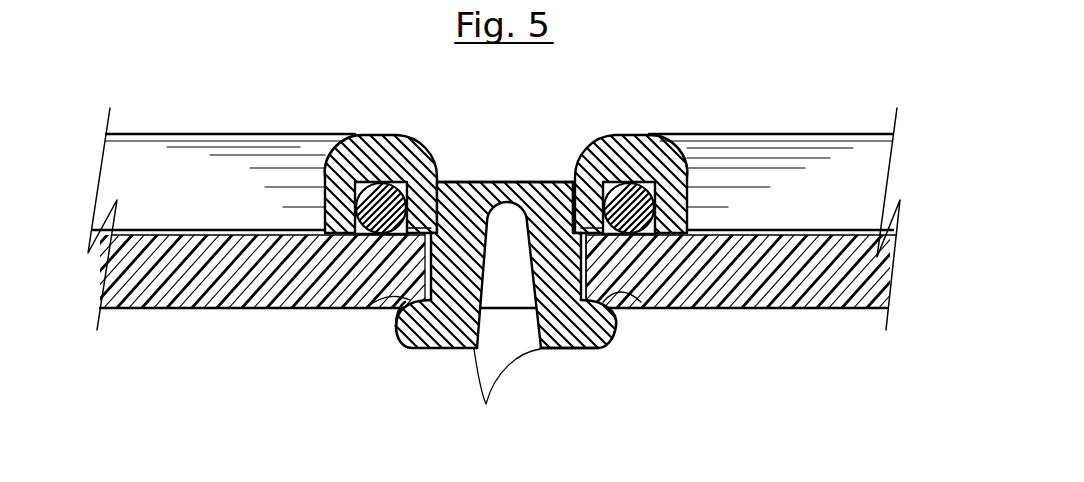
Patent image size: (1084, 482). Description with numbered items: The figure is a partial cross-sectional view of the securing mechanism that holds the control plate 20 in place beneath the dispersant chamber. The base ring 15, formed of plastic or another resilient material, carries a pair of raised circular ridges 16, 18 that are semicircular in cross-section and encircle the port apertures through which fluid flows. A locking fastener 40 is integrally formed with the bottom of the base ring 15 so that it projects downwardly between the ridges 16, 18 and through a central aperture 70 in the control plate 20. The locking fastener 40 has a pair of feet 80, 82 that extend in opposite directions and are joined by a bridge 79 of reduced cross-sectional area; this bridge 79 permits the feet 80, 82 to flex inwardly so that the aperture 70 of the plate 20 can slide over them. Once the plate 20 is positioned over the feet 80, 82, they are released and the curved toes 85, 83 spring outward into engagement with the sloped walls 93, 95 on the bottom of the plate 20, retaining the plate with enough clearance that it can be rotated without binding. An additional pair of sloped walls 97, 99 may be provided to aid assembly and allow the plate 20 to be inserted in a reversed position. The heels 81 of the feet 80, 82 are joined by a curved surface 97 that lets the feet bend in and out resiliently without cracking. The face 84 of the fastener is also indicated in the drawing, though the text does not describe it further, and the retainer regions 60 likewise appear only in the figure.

The base ring 15 is at (489, 181).
The raised circular ridge 16 is at (679, 168).
The raised circular ridge 18 is at (328, 168).
The control plate 20 is at (203, 309).
The locking fastener 40 is at (516, 272).
The seal retainer 60 is at (425, 162).
The central aperture 70 is at (572, 284).
The bridge 79 is at (504, 190).
The foot 80 is at (404, 334).
The heels 81 is at (550, 351).
The foot 82 is at (608, 340).
The curved toe 83 is at (580, 350).
The head side wall 84 is at (597, 226).
The curved toe 85 is at (400, 328).
The sloped wall 93 is at (410, 293).
The sloped wall 95 is at (632, 306).
The sloped wall 97 is at (428, 240).
The sloped wall 99 is at (585, 240).